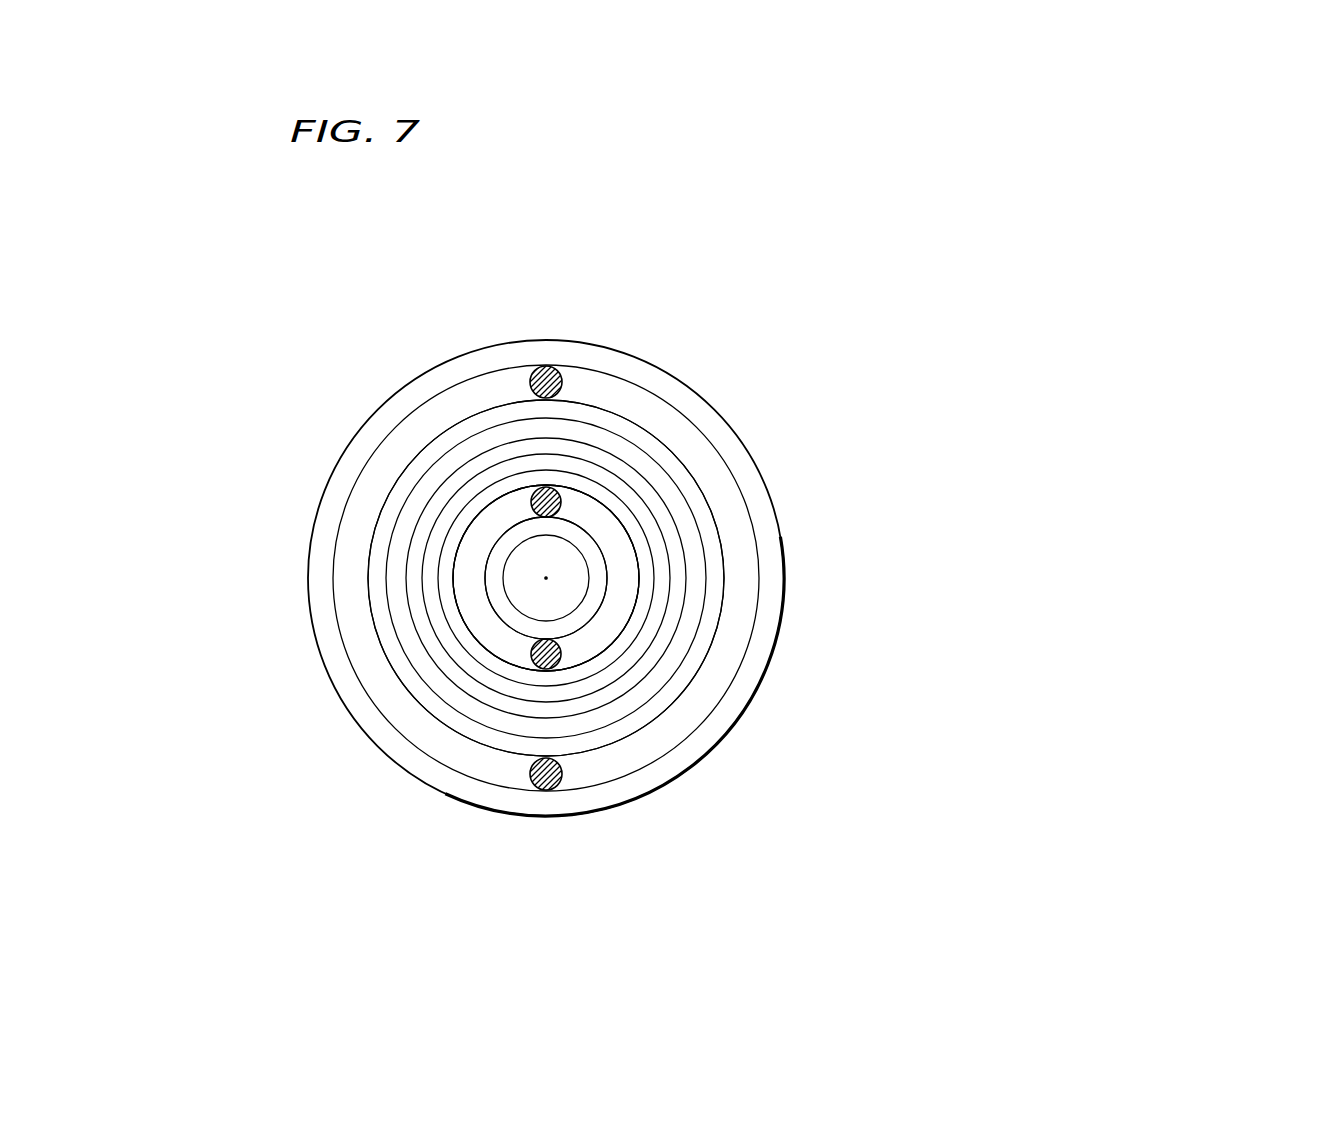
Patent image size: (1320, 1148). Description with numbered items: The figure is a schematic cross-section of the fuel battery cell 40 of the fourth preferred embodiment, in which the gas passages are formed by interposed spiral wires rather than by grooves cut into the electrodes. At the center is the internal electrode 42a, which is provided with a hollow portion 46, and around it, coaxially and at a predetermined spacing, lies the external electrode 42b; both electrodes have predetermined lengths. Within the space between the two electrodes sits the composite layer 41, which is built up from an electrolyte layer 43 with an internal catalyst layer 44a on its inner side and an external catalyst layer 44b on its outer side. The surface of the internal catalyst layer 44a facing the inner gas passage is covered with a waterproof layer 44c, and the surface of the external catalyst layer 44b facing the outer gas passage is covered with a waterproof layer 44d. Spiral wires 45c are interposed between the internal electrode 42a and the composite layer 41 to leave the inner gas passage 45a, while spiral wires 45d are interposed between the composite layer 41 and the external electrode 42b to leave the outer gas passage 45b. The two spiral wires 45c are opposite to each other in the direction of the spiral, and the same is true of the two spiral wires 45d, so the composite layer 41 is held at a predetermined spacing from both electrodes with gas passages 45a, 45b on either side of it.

The fuel battery cell 40 is at (566, 321).
The composite layer 41 is at (1118, 633).
The internal electrode 42a is at (594, 547).
The external electrode 42b is at (660, 381).
The electrolyte layer 43 is at (657, 663).
The internal catalyst layer 44a is at (652, 642).
The external catalyst layer 44b is at (658, 688).
The waterproof layer 44c is at (633, 623).
The waterproof layer 44d is at (662, 715).
The gas passage 45a is at (633, 577).
The gas passage 45b is at (733, 498).
The spiral wire 45c is at (527, 509).
The spiral wire 45d is at (505, 845).
The hollow portion 46 is at (518, 577).